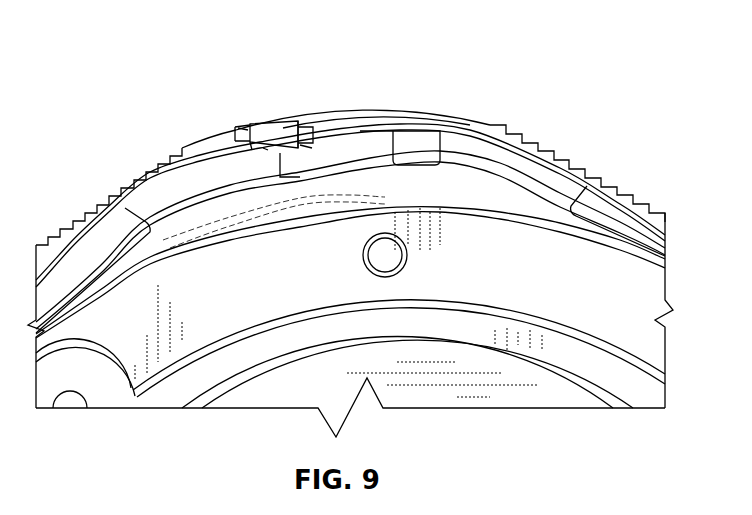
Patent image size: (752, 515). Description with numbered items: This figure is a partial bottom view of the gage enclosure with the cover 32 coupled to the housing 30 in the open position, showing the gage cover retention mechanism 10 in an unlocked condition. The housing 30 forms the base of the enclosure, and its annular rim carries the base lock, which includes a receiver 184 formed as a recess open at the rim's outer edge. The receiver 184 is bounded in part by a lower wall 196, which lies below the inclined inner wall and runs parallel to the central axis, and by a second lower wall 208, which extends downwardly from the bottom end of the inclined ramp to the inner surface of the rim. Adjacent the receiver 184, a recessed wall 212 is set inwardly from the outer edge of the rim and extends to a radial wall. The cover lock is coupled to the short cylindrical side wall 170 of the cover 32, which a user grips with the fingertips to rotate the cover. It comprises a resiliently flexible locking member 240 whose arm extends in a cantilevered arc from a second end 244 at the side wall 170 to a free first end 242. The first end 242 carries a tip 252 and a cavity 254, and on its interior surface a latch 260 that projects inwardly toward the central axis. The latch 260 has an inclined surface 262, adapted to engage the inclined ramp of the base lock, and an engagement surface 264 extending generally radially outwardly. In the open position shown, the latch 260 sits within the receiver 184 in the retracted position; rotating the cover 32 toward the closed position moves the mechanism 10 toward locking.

The gage cover retention mechanism 10 is at (339, 99).
The housing 30 is at (661, 289).
The cover 32 is at (576, 159).
The side wall 170 is at (189, 146).
The receiver 184 is at (312, 144).
The lower wall 196 is at (308, 150).
The lower wall 208 is at (250, 152).
The recessed wall 212 is at (367, 133).
The locking member 240 is at (372, 116).
The first end 242 is at (263, 126).
The second end 244 is at (484, 122).
The tip 252 is at (249, 128).
The cavity 254 is at (233, 127).
The latch 260 is at (296, 121).
The inclined surface 262 is at (264, 152).
The engagement surface 264 is at (308, 132).